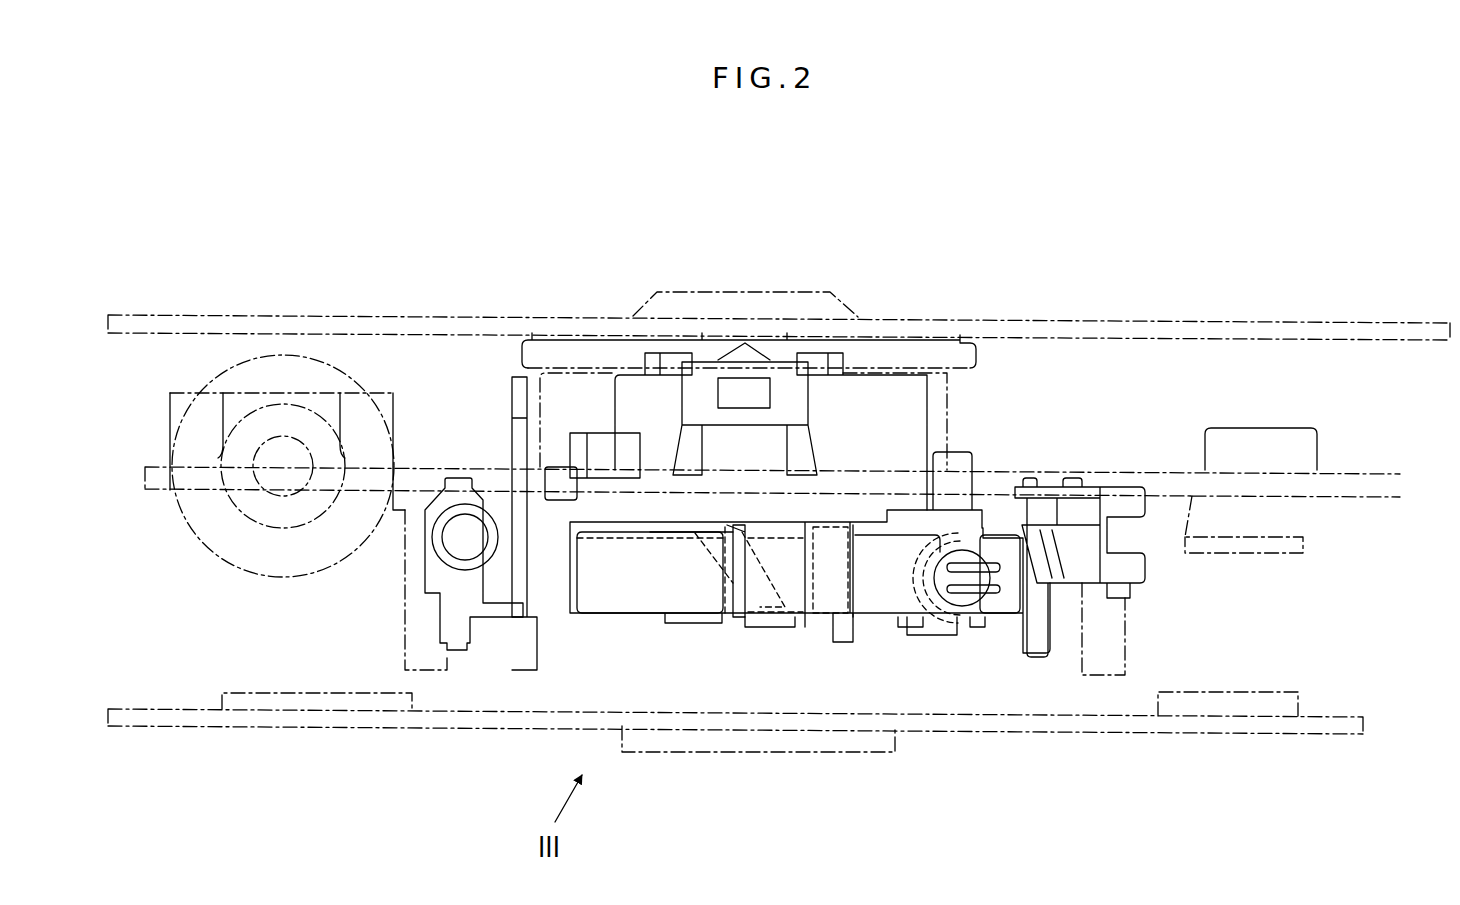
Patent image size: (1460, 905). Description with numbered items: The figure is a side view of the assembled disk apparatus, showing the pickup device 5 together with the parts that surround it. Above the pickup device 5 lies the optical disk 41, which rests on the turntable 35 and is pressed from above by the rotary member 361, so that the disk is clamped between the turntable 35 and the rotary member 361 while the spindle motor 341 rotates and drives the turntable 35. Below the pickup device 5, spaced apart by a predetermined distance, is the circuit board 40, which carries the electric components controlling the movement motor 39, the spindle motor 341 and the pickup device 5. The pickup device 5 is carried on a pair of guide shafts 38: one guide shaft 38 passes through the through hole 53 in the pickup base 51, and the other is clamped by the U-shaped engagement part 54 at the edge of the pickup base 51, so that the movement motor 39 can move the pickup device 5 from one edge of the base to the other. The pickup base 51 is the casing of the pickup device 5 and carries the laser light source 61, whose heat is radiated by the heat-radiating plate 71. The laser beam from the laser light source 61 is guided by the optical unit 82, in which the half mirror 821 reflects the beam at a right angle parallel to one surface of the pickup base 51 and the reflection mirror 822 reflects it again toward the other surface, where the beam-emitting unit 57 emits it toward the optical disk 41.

The pickup device 5 is at (923, 673).
The turntable 35 is at (968, 352).
The guide shafts 38 is at (458, 538).
The movement motor 39 is at (240, 360).
The circuit board 40 is at (1335, 735).
The optical disk 41 is at (1247, 322).
The pickup base 51 is at (860, 510).
The through hole 53 is at (477, 563).
The engagement part 54 is at (1127, 553).
The beam-emitting unit 57 is at (673, 390).
The laser light source 61 is at (958, 596).
The heat-radiating plate 71 is at (626, 597).
The optical unit 82 is at (838, 802).
The spindle motor 341 is at (528, 402).
The rotary member 361 is at (847, 306).
The half mirror 821 is at (832, 597).
The reflection mirror 822 is at (733, 573).